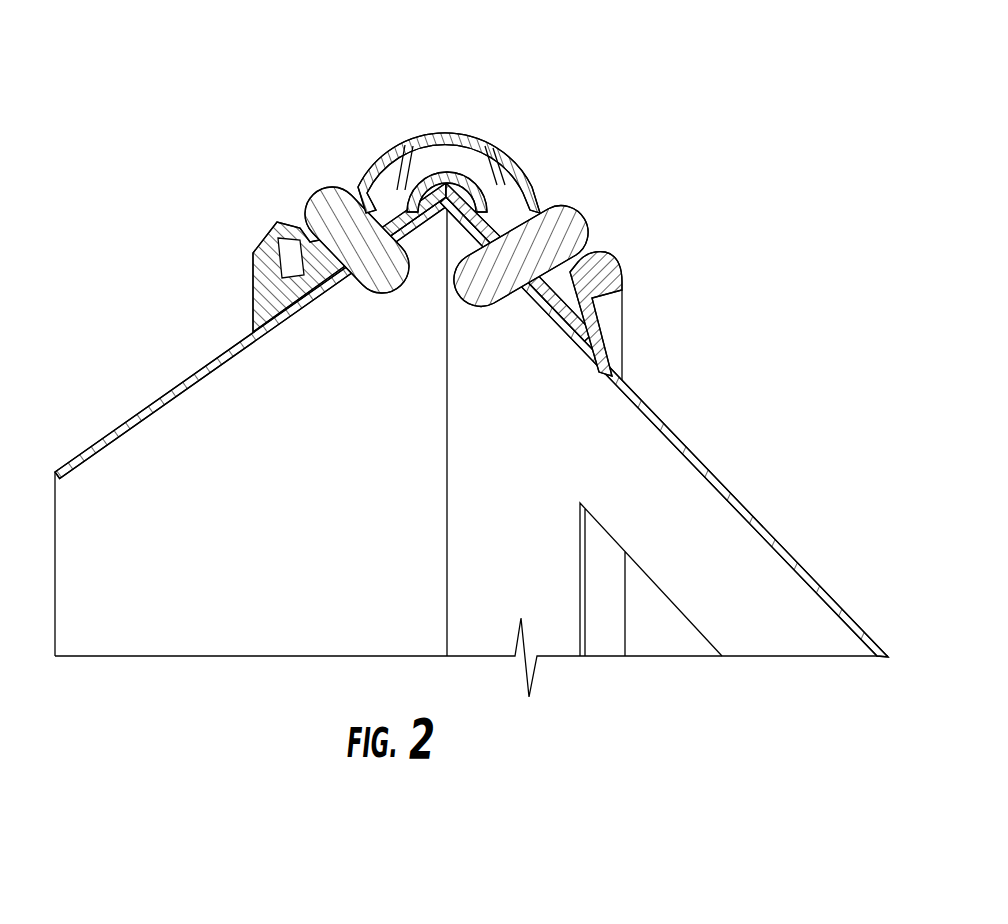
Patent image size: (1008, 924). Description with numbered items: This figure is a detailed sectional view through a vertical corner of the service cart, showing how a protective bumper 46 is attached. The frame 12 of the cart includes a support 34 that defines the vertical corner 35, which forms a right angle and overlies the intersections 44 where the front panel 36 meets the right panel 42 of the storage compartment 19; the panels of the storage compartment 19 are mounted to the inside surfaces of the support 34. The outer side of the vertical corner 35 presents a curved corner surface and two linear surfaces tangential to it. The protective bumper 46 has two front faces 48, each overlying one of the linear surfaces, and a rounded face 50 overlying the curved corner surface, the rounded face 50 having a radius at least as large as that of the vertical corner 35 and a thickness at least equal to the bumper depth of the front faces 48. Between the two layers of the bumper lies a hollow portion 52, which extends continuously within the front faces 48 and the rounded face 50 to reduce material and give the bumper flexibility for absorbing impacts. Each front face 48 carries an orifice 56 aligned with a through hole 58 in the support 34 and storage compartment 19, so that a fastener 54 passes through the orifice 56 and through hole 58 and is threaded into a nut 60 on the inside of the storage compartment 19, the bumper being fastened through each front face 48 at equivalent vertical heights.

The frame 12 is at (372, 183).
The storage compartment 19 is at (160, 559).
The support 34 is at (403, 136).
The vertical corner 35 is at (455, 138).
The front panel 36 is at (717, 465).
The right panel 42 is at (134, 414).
The intersections 44 is at (489, 137).
The protective bumper 46 is at (409, 138).
The front face 48 is at (262, 234).
The rounded face 50 is at (467, 137).
The hollow portion 52 is at (277, 255).
The fastener 54 is at (325, 205).
The orifice 56 is at (356, 180).
The through hole 58 is at (349, 285).
The nut 60 is at (362, 298).